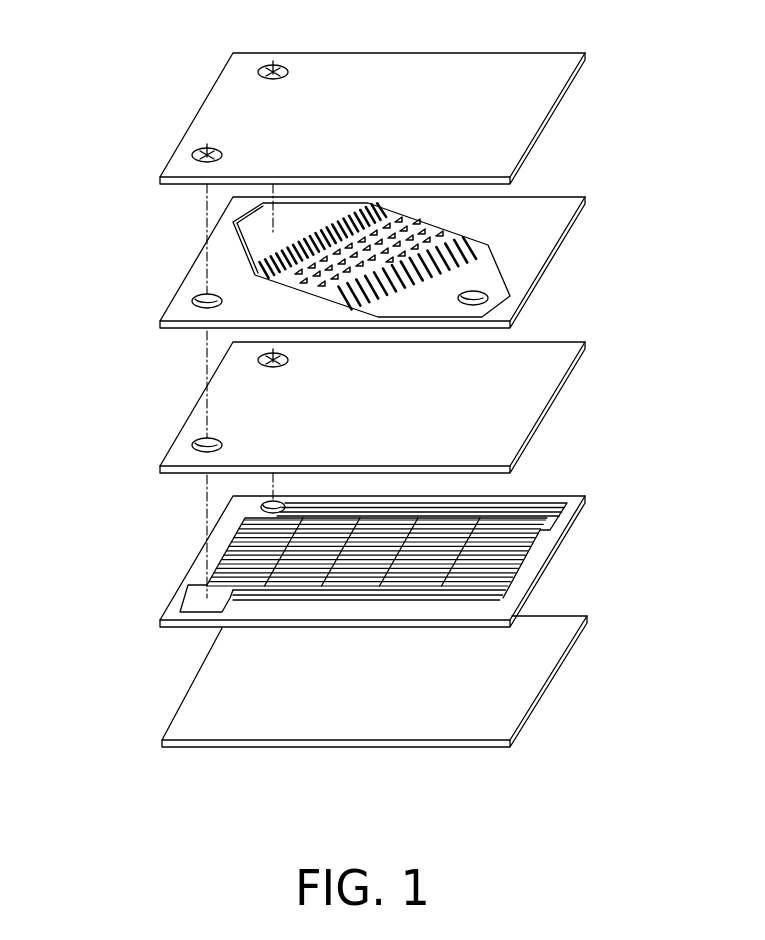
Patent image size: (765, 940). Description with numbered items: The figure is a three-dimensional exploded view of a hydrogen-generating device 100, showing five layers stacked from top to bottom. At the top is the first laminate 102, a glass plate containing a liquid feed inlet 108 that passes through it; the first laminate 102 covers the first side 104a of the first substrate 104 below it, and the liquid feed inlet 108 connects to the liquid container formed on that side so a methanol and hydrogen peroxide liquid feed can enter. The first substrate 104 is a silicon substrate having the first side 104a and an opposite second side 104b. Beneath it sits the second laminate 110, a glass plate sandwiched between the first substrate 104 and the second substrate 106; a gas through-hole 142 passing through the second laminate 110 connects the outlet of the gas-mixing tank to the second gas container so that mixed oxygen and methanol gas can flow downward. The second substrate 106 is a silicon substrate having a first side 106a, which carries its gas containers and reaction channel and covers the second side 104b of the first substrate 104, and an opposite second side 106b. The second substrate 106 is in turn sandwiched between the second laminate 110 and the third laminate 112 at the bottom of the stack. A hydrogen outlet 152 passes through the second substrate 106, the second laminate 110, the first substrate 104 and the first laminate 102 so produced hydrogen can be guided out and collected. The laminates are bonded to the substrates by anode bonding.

The hydrogen-generating device 100 is at (632, 783).
The first laminate 102 is at (556, 64).
The first substrate 104 is at (557, 208).
The first side 104a is at (175, 314).
The second side 104b is at (193, 330).
The second substrate 106 is at (556, 508).
The first side 106a is at (172, 614).
The second side 106b is at (193, 631).
The liquid feed inlet 108 is at (273, 68).
The second laminate 110 is at (556, 352).
The third laminate 112 is at (557, 627).
The gas through-hole 142 is at (272, 351).
The hydrogen outlet 152 is at (207, 152).